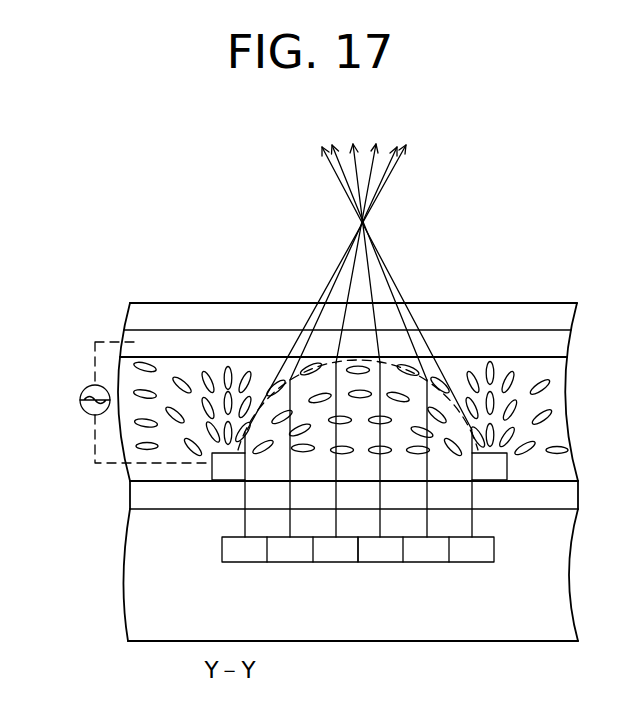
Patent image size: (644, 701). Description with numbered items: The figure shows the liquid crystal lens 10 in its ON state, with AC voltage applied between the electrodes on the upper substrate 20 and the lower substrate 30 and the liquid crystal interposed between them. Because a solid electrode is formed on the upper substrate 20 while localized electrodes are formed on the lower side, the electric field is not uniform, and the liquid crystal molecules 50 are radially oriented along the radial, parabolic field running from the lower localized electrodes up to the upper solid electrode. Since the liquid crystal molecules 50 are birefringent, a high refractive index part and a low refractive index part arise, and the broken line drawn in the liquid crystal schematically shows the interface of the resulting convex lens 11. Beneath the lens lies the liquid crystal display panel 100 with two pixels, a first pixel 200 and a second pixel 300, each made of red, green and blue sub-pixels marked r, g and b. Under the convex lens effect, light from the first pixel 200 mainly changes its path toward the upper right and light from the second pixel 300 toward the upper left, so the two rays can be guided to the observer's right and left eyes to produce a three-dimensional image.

The liquid crystal lens 10 is at (85, 302).
The convex lens 11 is at (331, 360).
The upper substrate 20 is at (172, 312).
The lower substrate 30 is at (139, 500).
The liquid crystal molecules 50 is at (252, 372).
The liquid crystal display panel 100 is at (137, 595).
The first pixel 200 is at (222, 567).
The second pixel 300 is at (360, 567).